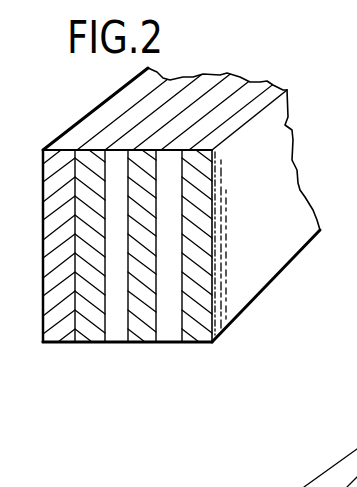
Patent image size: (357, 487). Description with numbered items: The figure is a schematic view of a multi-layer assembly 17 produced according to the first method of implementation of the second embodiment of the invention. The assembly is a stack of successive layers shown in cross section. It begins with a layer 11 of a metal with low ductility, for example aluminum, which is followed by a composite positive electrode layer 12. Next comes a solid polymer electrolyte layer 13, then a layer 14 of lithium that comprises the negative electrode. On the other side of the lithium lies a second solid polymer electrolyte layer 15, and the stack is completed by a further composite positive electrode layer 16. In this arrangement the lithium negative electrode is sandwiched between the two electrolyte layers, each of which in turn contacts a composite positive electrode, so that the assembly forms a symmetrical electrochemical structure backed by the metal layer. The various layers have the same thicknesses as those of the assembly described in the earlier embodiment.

The layer of a metal with low ductility 11 is at (57, 348).
The composite positive electrode layer 12 is at (98, 348).
The solid polymer electrolyte layer 13 is at (117, 346).
The layer of lithium 14 is at (146, 348).
The solid polymer electrolyte layer 15 is at (176, 350).
The composite positive electrode layer 16 is at (203, 320).
The multi-layer assembly 17 is at (115, 127).